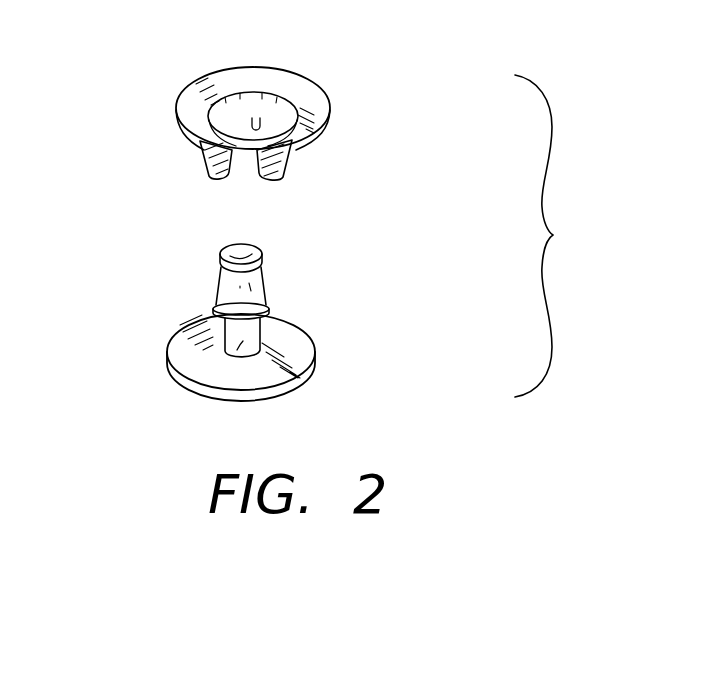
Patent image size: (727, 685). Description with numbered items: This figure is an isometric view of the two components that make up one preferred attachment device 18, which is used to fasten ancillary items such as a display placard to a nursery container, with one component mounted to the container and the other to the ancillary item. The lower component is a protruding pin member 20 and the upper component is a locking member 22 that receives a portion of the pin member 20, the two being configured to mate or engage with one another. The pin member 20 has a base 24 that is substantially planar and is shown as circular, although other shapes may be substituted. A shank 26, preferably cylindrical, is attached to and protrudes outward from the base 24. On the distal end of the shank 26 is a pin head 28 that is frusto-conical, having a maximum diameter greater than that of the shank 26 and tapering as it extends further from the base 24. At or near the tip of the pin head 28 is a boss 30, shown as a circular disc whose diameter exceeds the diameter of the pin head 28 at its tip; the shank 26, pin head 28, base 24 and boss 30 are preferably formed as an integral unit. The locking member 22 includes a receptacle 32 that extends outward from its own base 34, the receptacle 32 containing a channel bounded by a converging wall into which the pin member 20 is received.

The attachment device 18 is at (561, 236).
The pin member 20 is at (230, 329).
The locking member 22 is at (244, 102).
The base 24 is at (306, 376).
The shank 26 is at (208, 354).
The pin head 28 is at (234, 293).
The boss 30 is at (262, 268).
The receptacle 32 is at (205, 155).
The base 34 is at (190, 112).